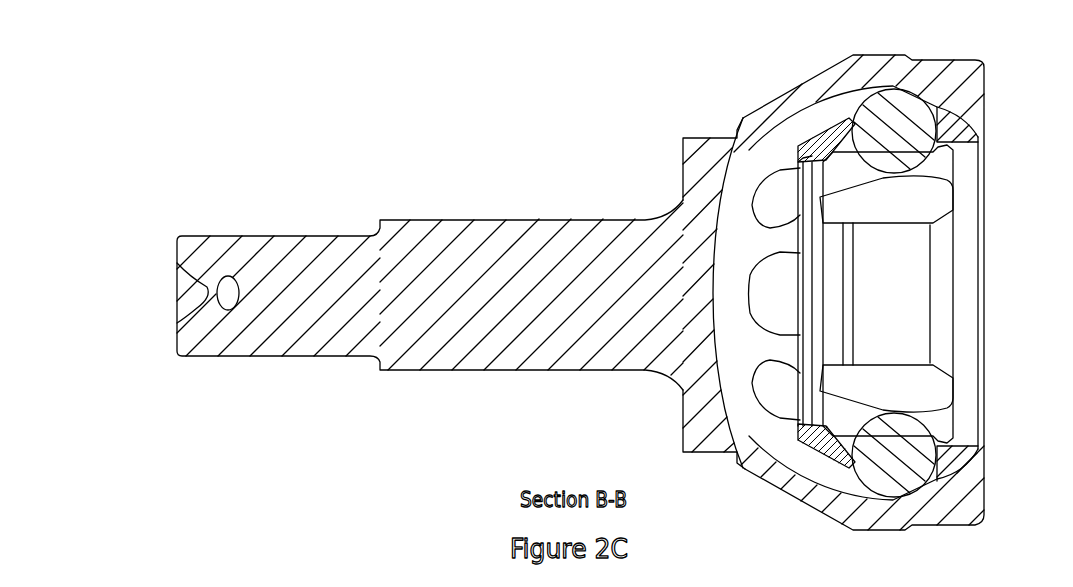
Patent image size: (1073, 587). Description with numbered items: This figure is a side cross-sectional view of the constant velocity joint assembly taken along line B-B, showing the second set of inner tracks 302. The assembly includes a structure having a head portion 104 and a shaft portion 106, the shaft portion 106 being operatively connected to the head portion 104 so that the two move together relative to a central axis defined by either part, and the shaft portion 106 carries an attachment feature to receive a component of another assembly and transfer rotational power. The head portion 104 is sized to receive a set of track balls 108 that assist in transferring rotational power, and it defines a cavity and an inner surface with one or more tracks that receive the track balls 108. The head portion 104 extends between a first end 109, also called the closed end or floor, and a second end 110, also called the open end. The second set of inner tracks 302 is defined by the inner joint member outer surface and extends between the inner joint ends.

The head portion 104 is at (862, 55).
The shaft portion 106 is at (447, 219).
The set of track balls 108 is at (906, 110).
The first end 109 is at (703, 159).
The second end 110 is at (981, 135).
The second set of inner tracks 302 is at (795, 152).